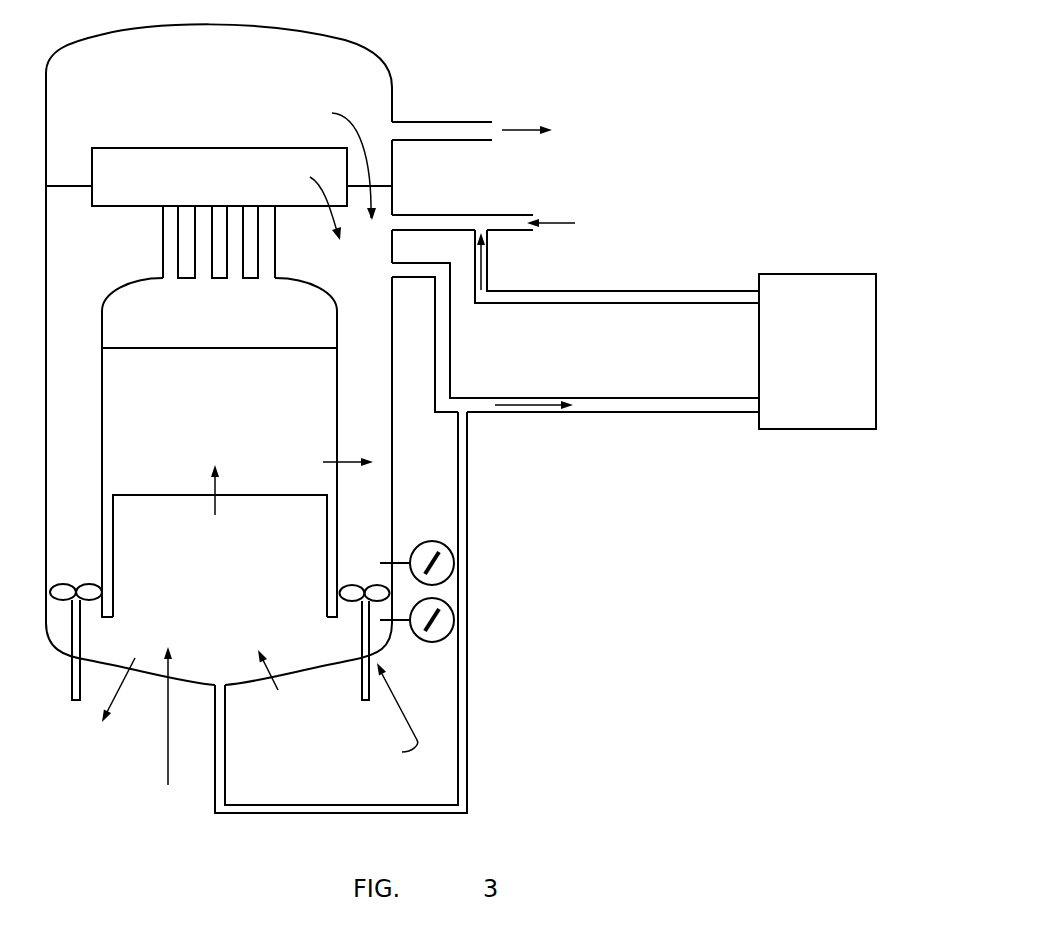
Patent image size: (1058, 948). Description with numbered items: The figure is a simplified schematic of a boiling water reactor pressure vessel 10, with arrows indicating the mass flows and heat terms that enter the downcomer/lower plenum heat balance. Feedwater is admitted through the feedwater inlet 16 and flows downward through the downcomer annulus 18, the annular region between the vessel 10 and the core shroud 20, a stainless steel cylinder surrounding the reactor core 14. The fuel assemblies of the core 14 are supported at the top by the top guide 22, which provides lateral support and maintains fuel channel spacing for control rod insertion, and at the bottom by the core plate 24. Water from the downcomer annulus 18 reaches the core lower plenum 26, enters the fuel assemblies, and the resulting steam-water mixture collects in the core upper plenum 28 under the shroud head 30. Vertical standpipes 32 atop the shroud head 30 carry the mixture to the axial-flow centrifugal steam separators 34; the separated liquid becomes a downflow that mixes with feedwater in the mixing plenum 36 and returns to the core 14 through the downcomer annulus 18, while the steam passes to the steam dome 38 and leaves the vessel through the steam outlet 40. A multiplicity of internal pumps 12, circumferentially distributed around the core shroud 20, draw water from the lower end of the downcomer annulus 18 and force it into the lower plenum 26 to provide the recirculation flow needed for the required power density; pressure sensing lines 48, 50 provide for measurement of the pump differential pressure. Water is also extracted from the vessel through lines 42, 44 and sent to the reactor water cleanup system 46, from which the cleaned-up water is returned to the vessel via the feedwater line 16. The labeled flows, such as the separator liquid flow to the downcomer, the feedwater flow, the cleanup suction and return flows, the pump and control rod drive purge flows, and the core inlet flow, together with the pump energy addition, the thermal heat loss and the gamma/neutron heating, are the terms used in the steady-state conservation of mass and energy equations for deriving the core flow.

The reactor pressure vessel 10 is at (47, 332).
The internal pumps 12 is at (66, 634).
The reactor core 14 is at (224, 402).
The feedwater inlet 16 is at (480, 215).
The downcomer annulus 18 is at (88, 394).
The core shroud 20 is at (101, 421).
The top guide 22 is at (213, 347).
The core plate 24 is at (137, 495).
The core lower plenum 26 is at (235, 587).
The core upper plenum 28 is at (279, 321).
The shroud head 30 is at (118, 288).
The standpipes 32 is at (163, 236).
The steam separators 34 is at (131, 148).
The mixing plenum 36 is at (87, 249).
The steam dome 38 is at (230, 61).
The steam outlet 40 is at (440, 122).
The line 42 is at (415, 278).
The line 44 is at (225, 787).
The reactor water cleanup system 46 is at (823, 430).
The pressure sensing line 48 is at (436, 642).
The pressure sensing line 50 is at (430, 542).